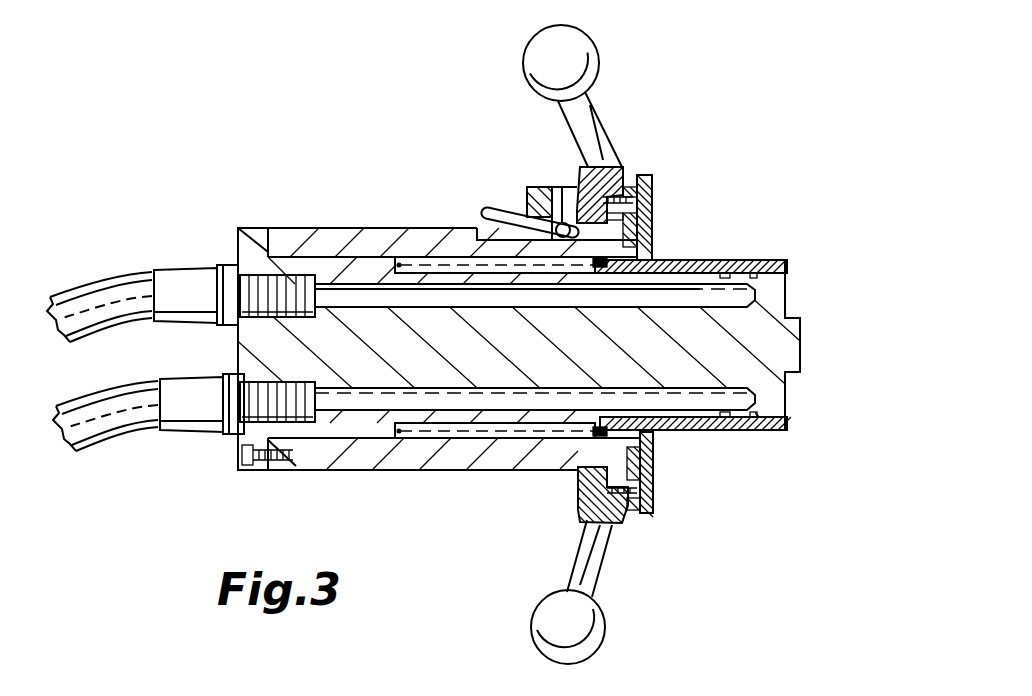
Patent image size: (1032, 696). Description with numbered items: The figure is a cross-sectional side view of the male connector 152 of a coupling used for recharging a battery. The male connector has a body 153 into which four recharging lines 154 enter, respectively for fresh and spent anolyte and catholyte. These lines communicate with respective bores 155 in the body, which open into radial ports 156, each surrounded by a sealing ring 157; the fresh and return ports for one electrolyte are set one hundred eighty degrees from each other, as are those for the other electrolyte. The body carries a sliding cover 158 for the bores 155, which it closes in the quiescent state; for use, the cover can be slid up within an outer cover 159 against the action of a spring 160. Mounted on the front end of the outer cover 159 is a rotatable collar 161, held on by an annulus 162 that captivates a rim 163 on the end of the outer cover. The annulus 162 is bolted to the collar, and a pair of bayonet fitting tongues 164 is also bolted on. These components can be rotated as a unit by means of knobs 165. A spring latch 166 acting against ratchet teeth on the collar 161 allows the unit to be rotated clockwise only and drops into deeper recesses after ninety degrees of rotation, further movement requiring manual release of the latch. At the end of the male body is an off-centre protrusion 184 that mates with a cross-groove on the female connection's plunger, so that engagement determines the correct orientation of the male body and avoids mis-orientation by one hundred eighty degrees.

The male connector 152 is at (230, 198).
The body 153 is at (413, 355).
The recharging lines 154 is at (183, 290).
The bores 155 is at (658, 295).
The radial ports 156 is at (738, 277).
The sealing ring 157 is at (755, 432).
The sliding cover 158 is at (702, 433).
The outer cover 159 is at (377, 237).
The spring 160 is at (520, 430).
The collar 161 is at (613, 167).
The annulus 162 is at (630, 507).
The rim 163 is at (653, 217).
The bayonet fitting tongues 164 is at (643, 513).
The knobs 165 is at (552, 52).
The spring latch 166 is at (568, 188).
The protrusion 184 is at (795, 358).